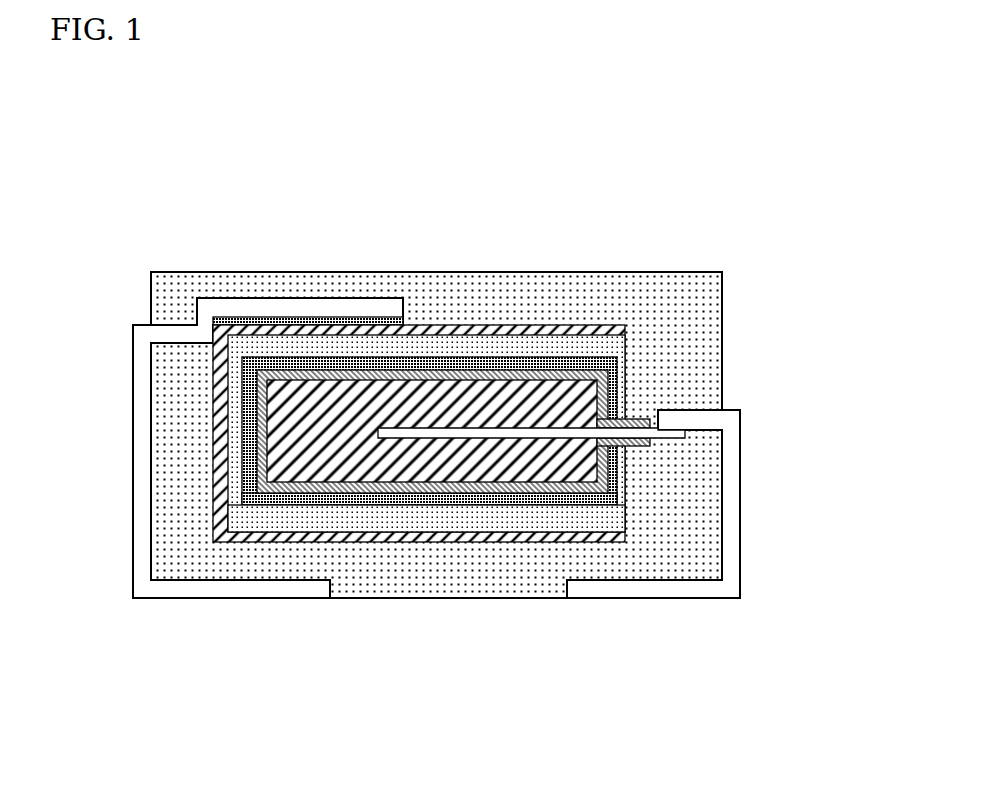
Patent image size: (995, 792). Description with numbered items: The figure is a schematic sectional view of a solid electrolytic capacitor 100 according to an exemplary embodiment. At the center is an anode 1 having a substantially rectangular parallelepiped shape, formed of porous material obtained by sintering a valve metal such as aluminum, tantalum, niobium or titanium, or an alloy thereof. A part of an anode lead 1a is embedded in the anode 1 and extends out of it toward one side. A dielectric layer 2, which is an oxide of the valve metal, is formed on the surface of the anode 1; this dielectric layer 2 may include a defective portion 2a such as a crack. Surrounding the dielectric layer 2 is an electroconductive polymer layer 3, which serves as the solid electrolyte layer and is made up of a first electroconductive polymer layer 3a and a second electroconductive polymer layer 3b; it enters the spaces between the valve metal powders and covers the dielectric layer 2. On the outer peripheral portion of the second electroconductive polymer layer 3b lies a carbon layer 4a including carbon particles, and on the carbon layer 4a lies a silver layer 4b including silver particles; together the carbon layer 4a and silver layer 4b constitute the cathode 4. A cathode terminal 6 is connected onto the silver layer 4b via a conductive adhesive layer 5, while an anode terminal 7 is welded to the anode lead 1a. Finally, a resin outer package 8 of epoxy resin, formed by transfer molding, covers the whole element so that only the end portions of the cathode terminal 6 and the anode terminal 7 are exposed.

The solid electrolytic capacitor 100 is at (778, 270).
The anode 1 is at (463, 375).
The anode lead 1a is at (595, 518).
The dielectric layer 2 is at (440, 370).
The defective portion 2a is at (405, 373).
The electroconductive polymer layer 3 is at (426, 616).
The first electroconductive polymer layer 3a is at (298, 502).
The second electroconductive polymer layer 3b is at (352, 512).
The cathode 4 is at (448, 348).
The carbon layer 4a is at (565, 332).
The silver layer 4b is at (613, 342).
The conductive adhesive layer 5 is at (340, 318).
The cathode terminal 6 is at (233, 307).
The anode terminal 7 is at (665, 590).
The resin outer package 8 is at (193, 555).